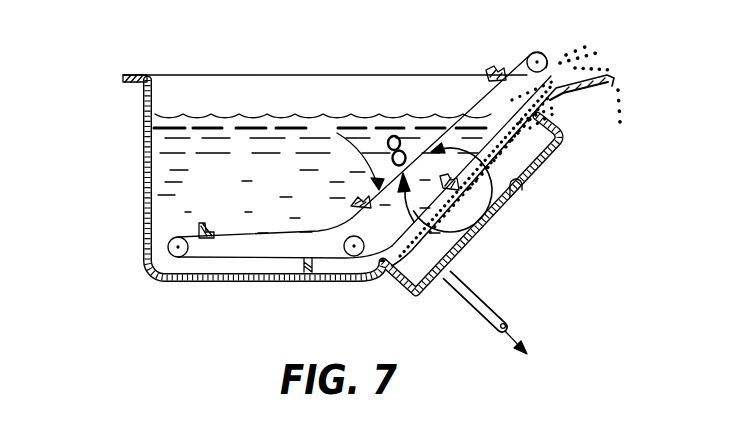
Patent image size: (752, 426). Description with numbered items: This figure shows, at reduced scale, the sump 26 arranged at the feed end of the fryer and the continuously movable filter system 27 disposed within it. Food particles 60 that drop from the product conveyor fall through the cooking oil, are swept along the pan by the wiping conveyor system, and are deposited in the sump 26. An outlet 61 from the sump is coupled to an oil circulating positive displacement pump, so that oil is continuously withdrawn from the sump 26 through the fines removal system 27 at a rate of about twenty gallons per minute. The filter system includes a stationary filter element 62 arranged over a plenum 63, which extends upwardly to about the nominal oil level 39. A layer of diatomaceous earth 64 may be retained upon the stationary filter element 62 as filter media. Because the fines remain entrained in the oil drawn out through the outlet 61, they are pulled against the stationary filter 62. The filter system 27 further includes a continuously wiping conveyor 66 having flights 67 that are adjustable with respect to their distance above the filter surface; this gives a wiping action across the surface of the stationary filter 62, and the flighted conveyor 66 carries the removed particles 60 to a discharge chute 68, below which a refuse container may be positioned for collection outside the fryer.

The sump 26 is at (145, 194).
The nominal oil level 39 is at (187, 124).
The filter system 27 is at (346, 153).
The wiping conveyor 66 is at (233, 232).
The food particles 60 is at (490, 140).
The layer of diatomaceous earth 64 is at (537, 122).
The discharge chute 68 is at (581, 52).
The stationary filter element 62 is at (512, 160).
The plenum 63 is at (521, 198).
The flights 67 is at (453, 188).
The outlet 61 is at (495, 300).